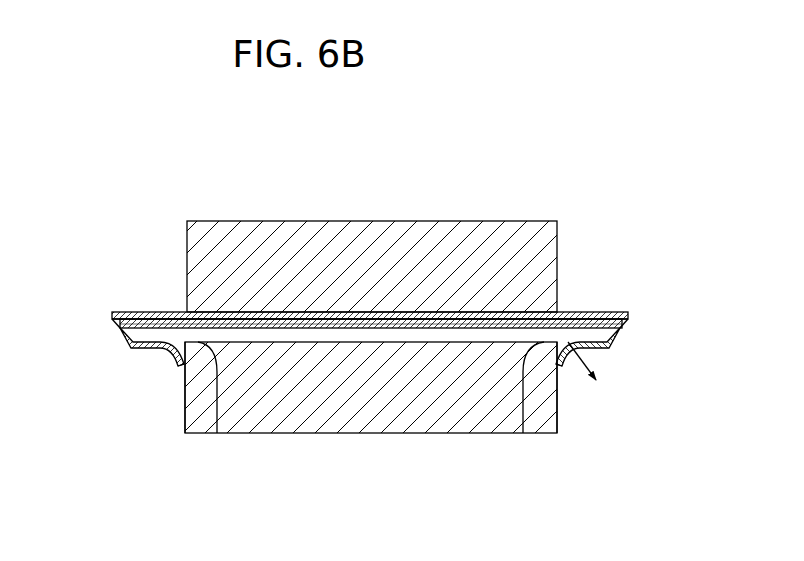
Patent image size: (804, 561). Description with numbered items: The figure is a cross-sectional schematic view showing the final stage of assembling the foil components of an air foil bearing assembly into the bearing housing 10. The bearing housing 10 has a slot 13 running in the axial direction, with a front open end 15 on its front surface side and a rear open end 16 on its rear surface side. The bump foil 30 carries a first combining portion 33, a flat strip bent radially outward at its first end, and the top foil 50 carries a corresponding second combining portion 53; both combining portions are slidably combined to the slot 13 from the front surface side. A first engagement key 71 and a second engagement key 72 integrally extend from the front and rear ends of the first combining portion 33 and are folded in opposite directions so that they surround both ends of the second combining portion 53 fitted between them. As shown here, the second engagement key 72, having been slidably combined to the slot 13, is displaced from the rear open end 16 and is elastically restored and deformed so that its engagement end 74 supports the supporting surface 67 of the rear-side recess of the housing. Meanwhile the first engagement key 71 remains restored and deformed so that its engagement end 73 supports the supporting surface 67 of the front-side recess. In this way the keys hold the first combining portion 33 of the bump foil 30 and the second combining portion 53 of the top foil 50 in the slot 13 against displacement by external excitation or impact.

The bearing housing 10 is at (562, 251).
The slot 13 is at (451, 352).
The front open end 15 is at (217, 433).
The rear open end 16 is at (523, 433).
The bump foil 30 is at (429, 305).
The first combining portion 33 is at (372, 320).
The top foil 50 is at (398, 340).
The second combining portion 53 is at (341, 325).
The supporting surface 67 is at (184, 406).
The first engagement key 71 is at (132, 356).
The second engagement key 72 is at (612, 357).
The engagement end 73 is at (181, 367).
The engagement end 74 is at (561, 367).